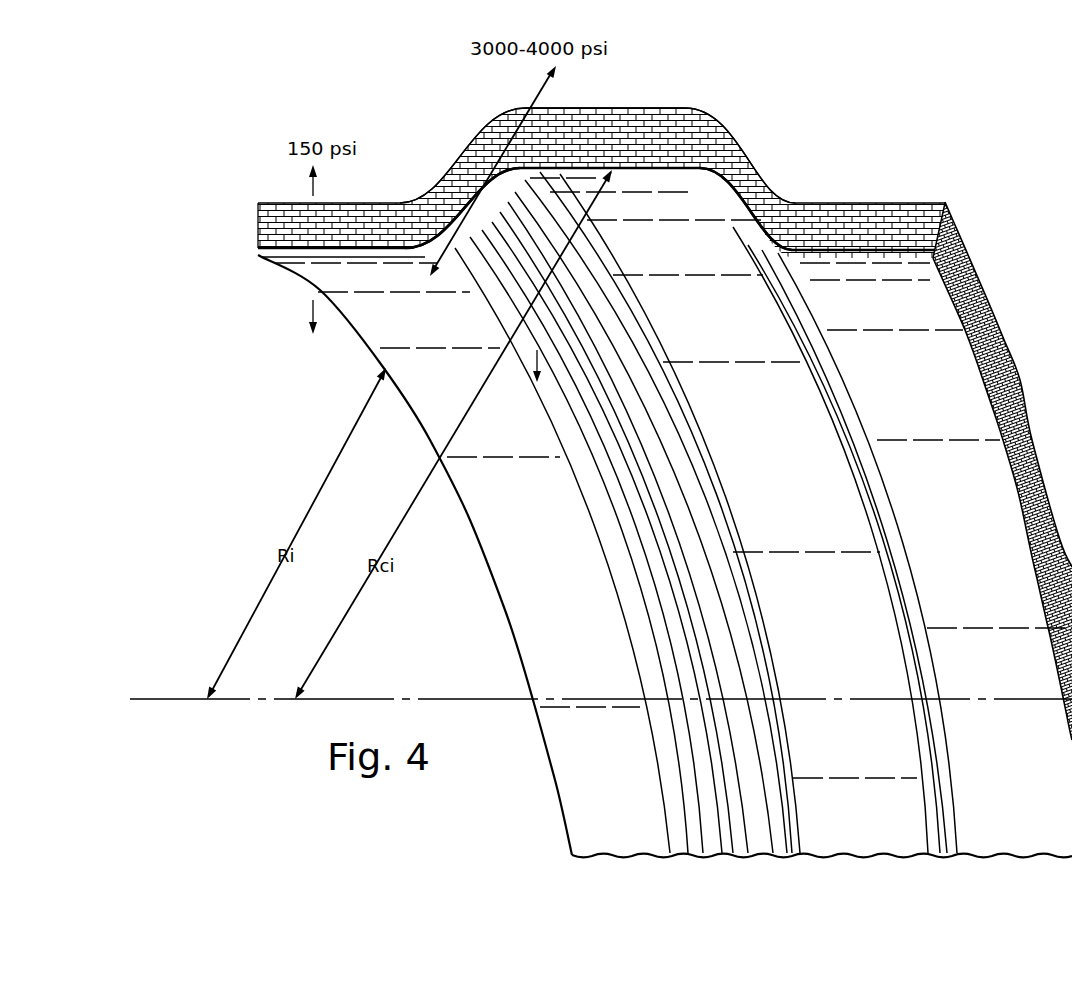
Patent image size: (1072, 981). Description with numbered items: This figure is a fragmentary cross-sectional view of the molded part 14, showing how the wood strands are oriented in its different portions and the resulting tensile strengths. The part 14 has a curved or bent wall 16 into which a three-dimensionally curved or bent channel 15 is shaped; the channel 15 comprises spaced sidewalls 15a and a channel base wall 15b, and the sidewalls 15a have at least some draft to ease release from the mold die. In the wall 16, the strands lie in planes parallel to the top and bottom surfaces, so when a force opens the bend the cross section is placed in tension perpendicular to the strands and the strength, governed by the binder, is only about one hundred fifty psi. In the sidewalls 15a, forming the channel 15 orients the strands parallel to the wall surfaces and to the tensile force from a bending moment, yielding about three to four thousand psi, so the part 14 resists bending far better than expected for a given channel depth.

The part 14 is at (512, 572).
The channel 15 is at (766, 116).
The sidewall 15a is at (458, 158).
The channel base wall 15b is at (628, 110).
The wall 16 is at (515, 428).